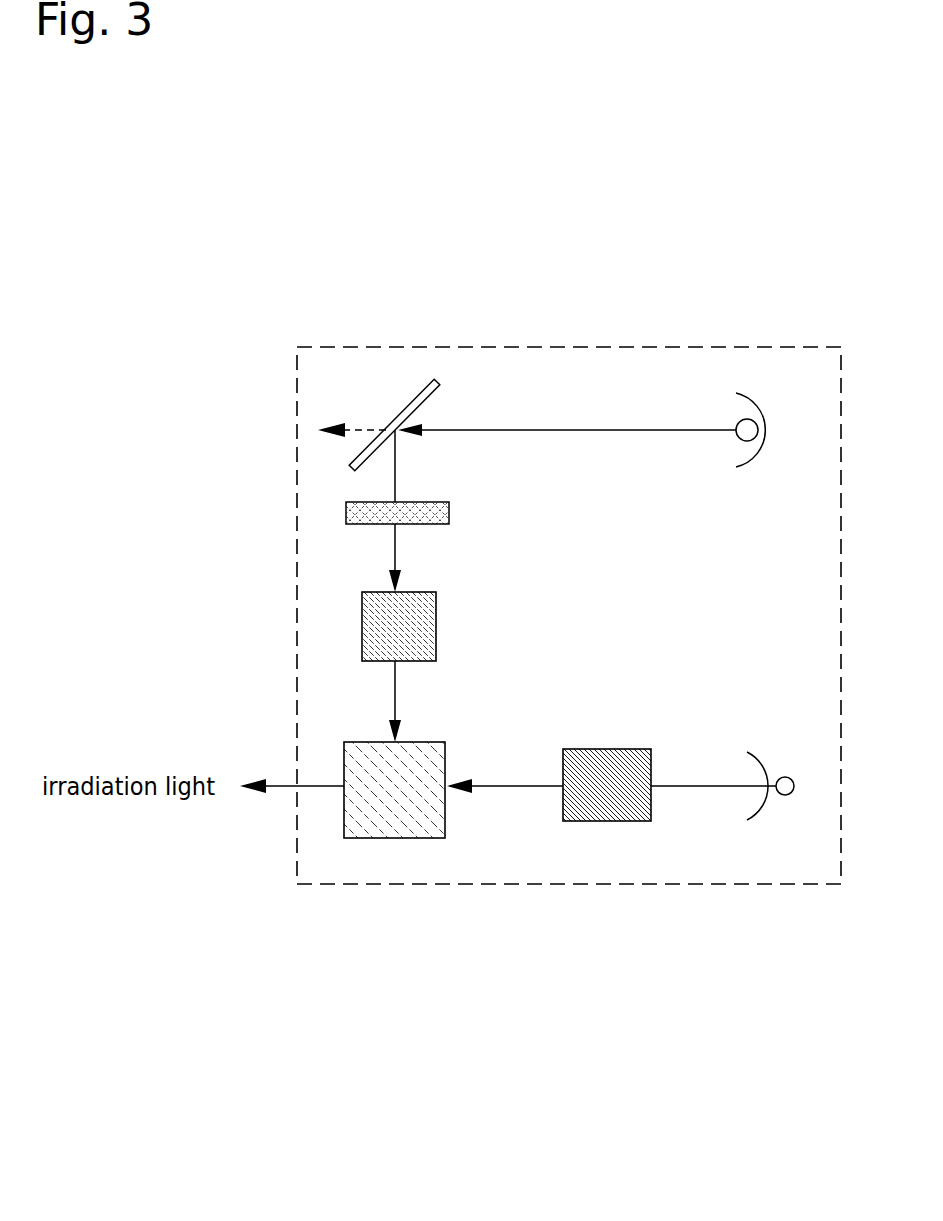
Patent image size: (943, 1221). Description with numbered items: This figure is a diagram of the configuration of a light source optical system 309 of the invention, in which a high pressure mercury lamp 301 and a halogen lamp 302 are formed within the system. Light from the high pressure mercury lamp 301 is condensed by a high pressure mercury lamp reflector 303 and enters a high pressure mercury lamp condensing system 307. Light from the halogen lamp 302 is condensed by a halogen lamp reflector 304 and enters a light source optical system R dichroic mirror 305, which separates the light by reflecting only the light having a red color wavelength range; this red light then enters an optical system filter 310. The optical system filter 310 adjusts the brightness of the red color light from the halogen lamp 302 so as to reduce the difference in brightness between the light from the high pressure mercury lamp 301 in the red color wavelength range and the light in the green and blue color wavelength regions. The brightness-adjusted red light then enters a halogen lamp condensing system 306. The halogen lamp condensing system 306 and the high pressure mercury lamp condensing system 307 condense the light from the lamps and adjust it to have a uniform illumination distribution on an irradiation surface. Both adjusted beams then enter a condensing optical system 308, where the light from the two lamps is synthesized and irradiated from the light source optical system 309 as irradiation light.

The high pressure mercury lamp 301 is at (785, 795).
The halogen lamp 302 is at (737, 465).
The high pressure mercury lamp reflector 303 is at (762, 820).
The halogen lamp reflector 304 is at (737, 393).
The light source optical system R dichroic mirror 305 is at (434, 382).
The halogen lamp condensing system 306 is at (362, 632).
The high pressure mercury lamp condensing system 307 is at (591, 822).
The condensing optical system 308 is at (385, 838).
The light source optical system 309 is at (650, 347).
The optical system filter 310 is at (346, 513).